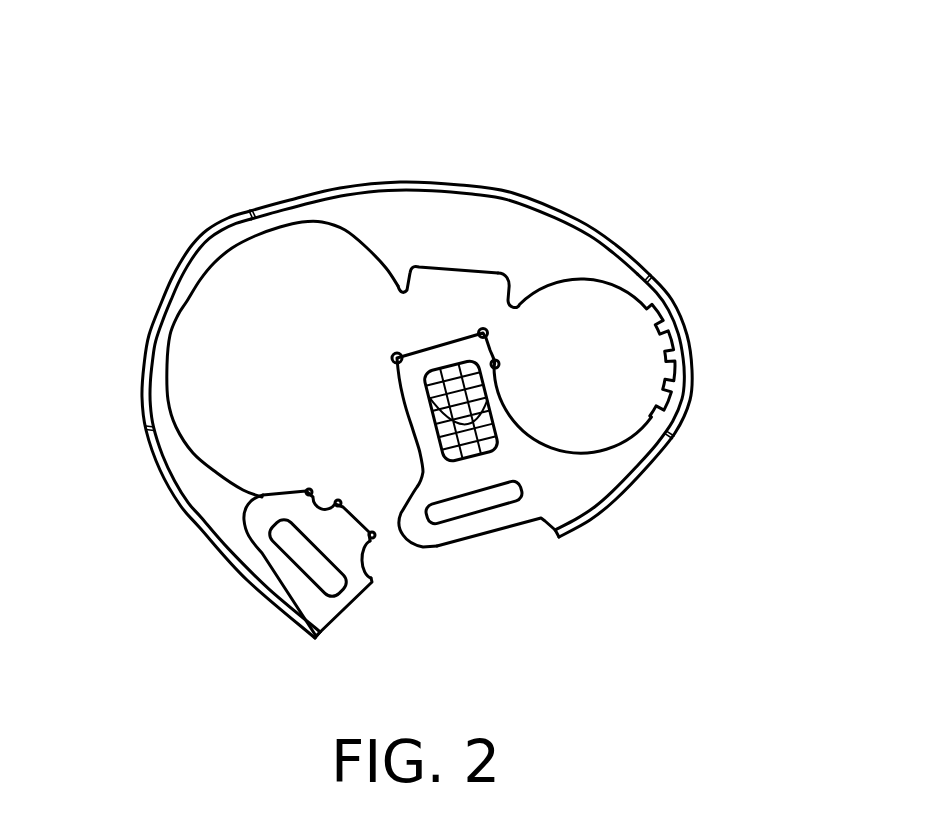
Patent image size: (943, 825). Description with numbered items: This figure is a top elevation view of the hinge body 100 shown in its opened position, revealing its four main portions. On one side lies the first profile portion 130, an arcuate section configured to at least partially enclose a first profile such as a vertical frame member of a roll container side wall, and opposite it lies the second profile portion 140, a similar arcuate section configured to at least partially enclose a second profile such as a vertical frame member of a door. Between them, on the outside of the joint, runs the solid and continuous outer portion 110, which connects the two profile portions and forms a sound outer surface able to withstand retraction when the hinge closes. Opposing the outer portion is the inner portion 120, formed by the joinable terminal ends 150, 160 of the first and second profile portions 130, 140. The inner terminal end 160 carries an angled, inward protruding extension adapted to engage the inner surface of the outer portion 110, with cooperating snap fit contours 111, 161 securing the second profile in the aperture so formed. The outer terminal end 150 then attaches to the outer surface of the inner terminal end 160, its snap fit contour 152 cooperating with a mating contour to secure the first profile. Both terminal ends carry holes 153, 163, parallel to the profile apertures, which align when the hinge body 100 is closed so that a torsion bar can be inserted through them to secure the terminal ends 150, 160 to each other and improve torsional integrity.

The hinge body 100 is at (426, 340).
The outer portion 110 is at (454, 169).
The snap fit contour 111 is at (416, 287).
The inner portion 120 is at (510, 547).
The first profile portion 130 is at (127, 388).
The second profile portion 140 is at (699, 405).
The terminal end 150 is at (347, 521).
The snap fit contour 152 is at (372, 545).
The hole 153 is at (283, 533).
The terminal end 160 is at (420, 443).
The snap fit contour 161 is at (394, 356).
The hole 163 is at (442, 510).